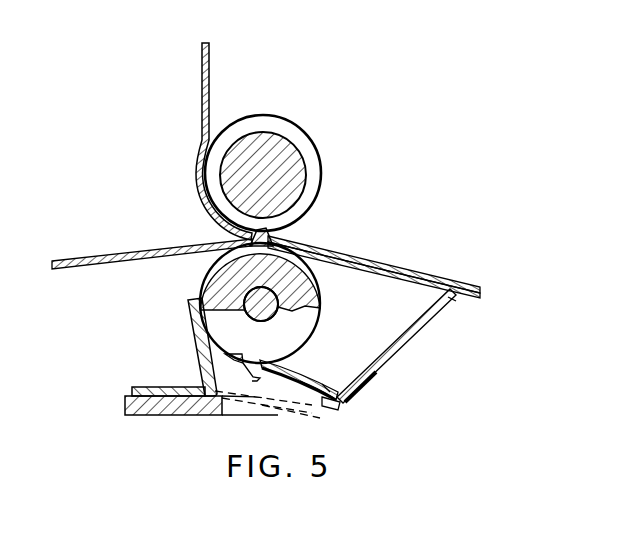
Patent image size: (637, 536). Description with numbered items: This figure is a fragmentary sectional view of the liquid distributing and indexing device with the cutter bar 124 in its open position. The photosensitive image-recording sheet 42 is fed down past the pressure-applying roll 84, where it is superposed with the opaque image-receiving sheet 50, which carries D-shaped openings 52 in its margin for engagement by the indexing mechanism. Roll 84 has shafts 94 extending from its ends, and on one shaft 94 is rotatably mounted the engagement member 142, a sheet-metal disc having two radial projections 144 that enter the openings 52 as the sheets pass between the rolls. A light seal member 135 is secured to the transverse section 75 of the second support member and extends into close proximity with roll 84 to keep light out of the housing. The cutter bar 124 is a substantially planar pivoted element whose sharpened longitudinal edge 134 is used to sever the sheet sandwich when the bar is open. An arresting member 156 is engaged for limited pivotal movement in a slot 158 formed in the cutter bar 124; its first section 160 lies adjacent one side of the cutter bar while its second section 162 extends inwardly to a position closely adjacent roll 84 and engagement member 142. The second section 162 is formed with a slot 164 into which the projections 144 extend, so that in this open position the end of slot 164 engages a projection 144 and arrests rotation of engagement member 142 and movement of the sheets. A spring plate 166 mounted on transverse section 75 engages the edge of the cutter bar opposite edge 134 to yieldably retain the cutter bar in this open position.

The image-recording sheet 42 is at (203, 129).
The roll 84 is at (323, 182).
The radial projections 144 is at (292, 233).
The D-shaped openings 52 is at (283, 243).
The image-receiving sheet 50 is at (102, 257).
The longitudinal edge 134 is at (454, 300).
The engagement member 142 is at (322, 311).
The shafts 94 is at (253, 306).
The member 135 is at (202, 352).
The slot 164 is at (282, 368).
The arresting member 156 is at (331, 380).
The cutter bar 124 is at (386, 365).
The second section 162 is at (312, 385).
The first section 160 is at (350, 394).
The slot 158 is at (331, 410).
The spring plate 166 is at (266, 416).
The transverse section 75 is at (182, 416).